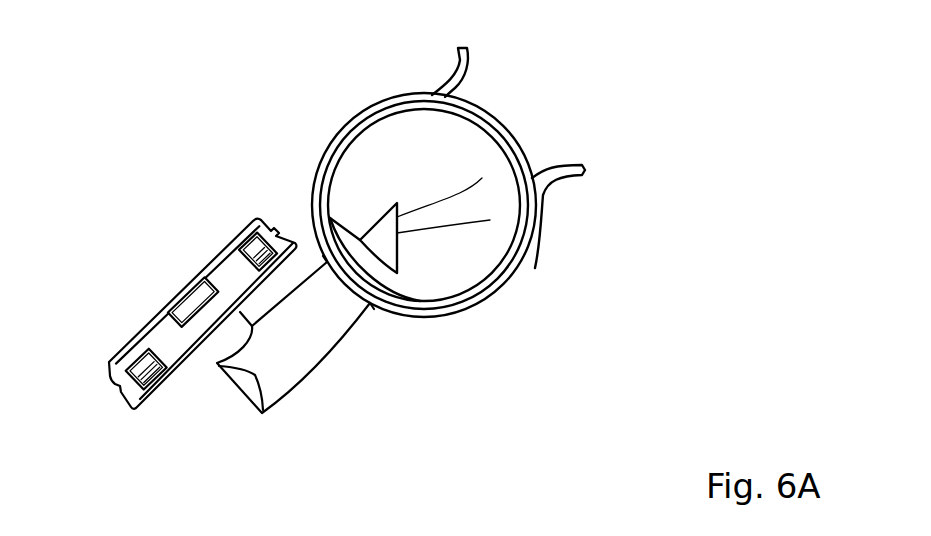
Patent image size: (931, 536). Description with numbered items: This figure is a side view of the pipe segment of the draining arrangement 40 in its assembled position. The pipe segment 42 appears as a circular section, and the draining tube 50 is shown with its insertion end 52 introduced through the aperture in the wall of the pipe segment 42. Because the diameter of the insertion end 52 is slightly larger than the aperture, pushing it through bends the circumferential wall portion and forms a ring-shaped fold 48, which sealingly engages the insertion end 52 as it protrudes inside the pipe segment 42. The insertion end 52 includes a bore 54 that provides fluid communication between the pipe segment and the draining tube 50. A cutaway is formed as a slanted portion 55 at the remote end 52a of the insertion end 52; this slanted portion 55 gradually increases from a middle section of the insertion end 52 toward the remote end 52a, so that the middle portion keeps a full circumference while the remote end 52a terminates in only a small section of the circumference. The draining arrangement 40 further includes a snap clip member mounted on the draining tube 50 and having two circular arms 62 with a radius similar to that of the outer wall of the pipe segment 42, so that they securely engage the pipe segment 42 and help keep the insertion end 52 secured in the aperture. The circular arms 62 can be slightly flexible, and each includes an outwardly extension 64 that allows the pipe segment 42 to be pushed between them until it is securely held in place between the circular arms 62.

The draining arrangement 40 is at (230, 193).
The pipe segment 42 is at (500, 120).
The ring-shaped fold 48 is at (353, 250).
The draining tube 50 is at (300, 347).
The insertion end 52 is at (387, 233).
The remote end 52a is at (397, 270).
The bore 54 is at (490, 220).
The slanted portion 55 is at (482, 178).
The circular arms 62 is at (353, 113).
The outwardly extension 64 is at (469, 66).